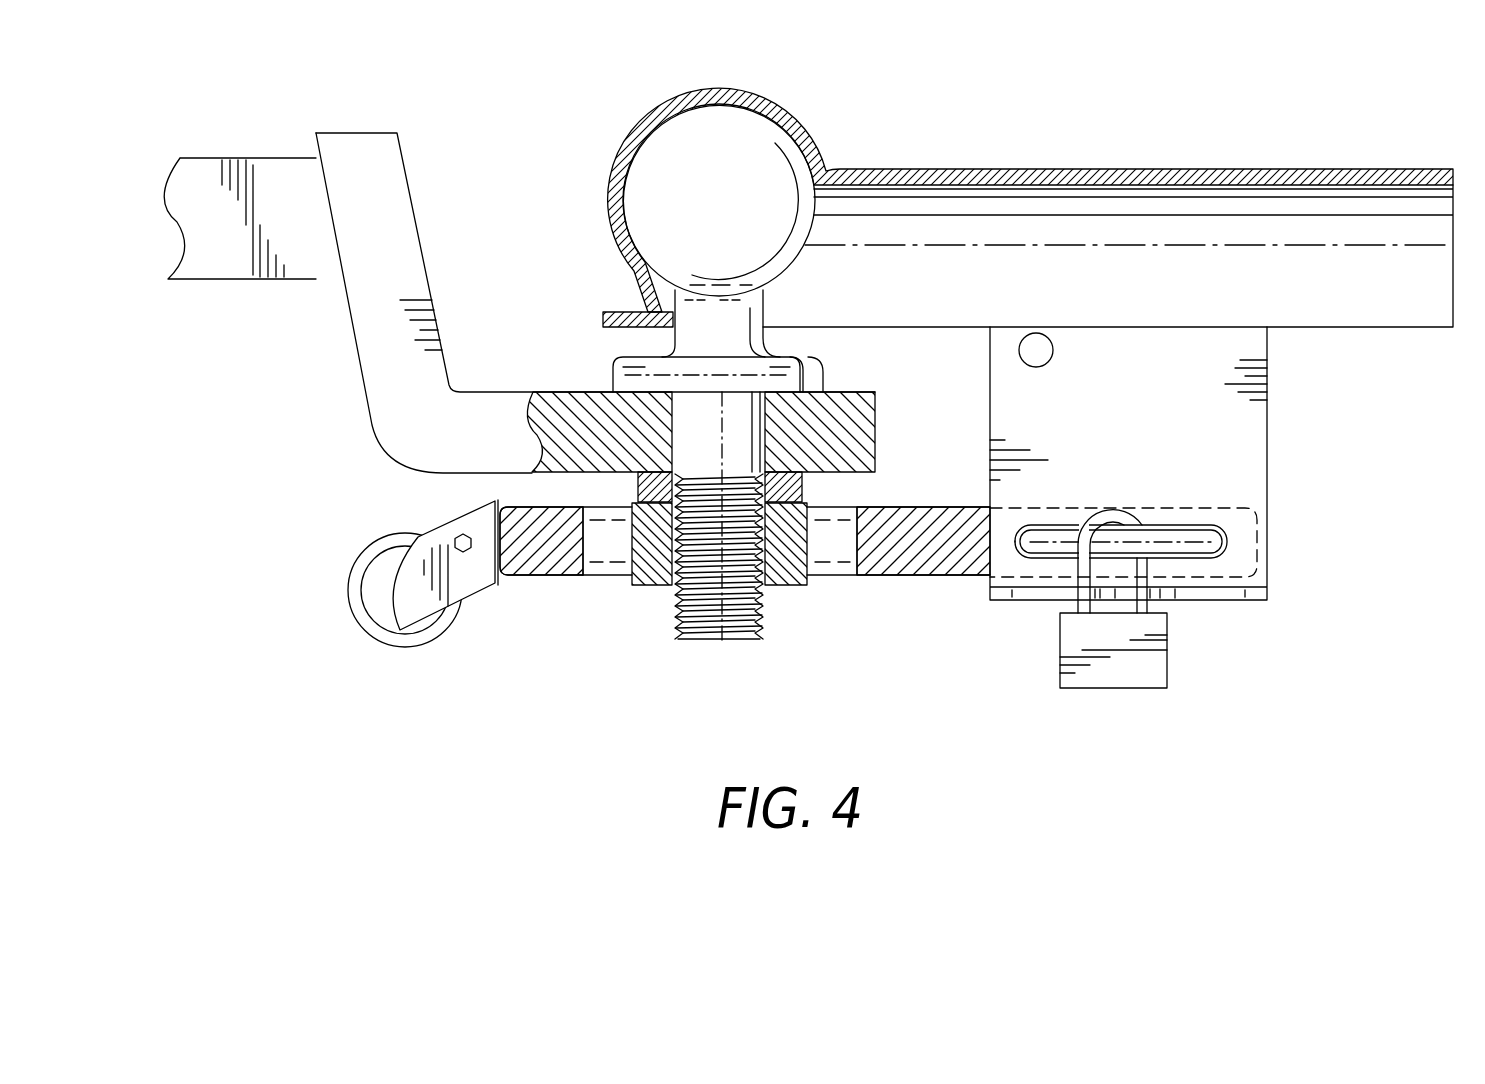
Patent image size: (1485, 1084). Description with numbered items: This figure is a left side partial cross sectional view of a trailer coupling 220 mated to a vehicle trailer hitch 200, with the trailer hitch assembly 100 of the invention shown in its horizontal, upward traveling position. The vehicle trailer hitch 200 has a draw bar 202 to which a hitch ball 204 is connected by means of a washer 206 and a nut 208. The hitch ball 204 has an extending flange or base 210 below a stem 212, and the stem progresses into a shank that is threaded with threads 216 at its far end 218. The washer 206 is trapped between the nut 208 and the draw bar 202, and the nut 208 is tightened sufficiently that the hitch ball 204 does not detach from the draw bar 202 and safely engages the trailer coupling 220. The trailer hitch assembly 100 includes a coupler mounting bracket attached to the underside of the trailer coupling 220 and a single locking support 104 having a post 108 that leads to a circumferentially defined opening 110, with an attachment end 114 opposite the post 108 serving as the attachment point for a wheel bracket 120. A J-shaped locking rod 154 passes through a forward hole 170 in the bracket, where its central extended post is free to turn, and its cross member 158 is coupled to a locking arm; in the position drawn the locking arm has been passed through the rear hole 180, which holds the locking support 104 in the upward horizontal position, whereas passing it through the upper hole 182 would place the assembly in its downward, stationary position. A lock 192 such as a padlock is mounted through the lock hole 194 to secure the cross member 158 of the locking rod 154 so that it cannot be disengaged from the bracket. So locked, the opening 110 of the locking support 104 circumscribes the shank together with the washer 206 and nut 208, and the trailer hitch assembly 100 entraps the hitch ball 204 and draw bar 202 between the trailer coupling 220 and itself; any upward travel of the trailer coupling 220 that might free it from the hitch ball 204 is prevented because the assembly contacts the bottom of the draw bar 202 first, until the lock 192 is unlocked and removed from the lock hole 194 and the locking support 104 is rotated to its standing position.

The trailer hitch assembly 100 is at (306, 654).
The locking support 104 is at (985, 510).
The post 108 is at (620, 593).
The opening 110 is at (605, 570).
The attachment end 114 is at (533, 577).
The wheel bracket 120 is at (467, 580).
The locking rod 154 is at (1180, 528).
The cross member 158 is at (1183, 492).
The forward hole 170 is at (1028, 523).
The rear hole 180 is at (1227, 548).
The upper hole 182 is at (1045, 360).
The lock 192 is at (1156, 636).
The lock hole 194 is at (1150, 587).
The vehicle trailer hitch 200 is at (265, 142).
The draw bar 202 is at (407, 433).
The hitch ball 204 is at (697, 155).
The washer 206 is at (790, 492).
The nut 208 is at (778, 575).
The base 210 is at (625, 365).
The stem 212 is at (697, 322).
The threads 216 is at (692, 607).
The far end 218 is at (693, 643).
The trailer coupling 220 is at (1010, 168).